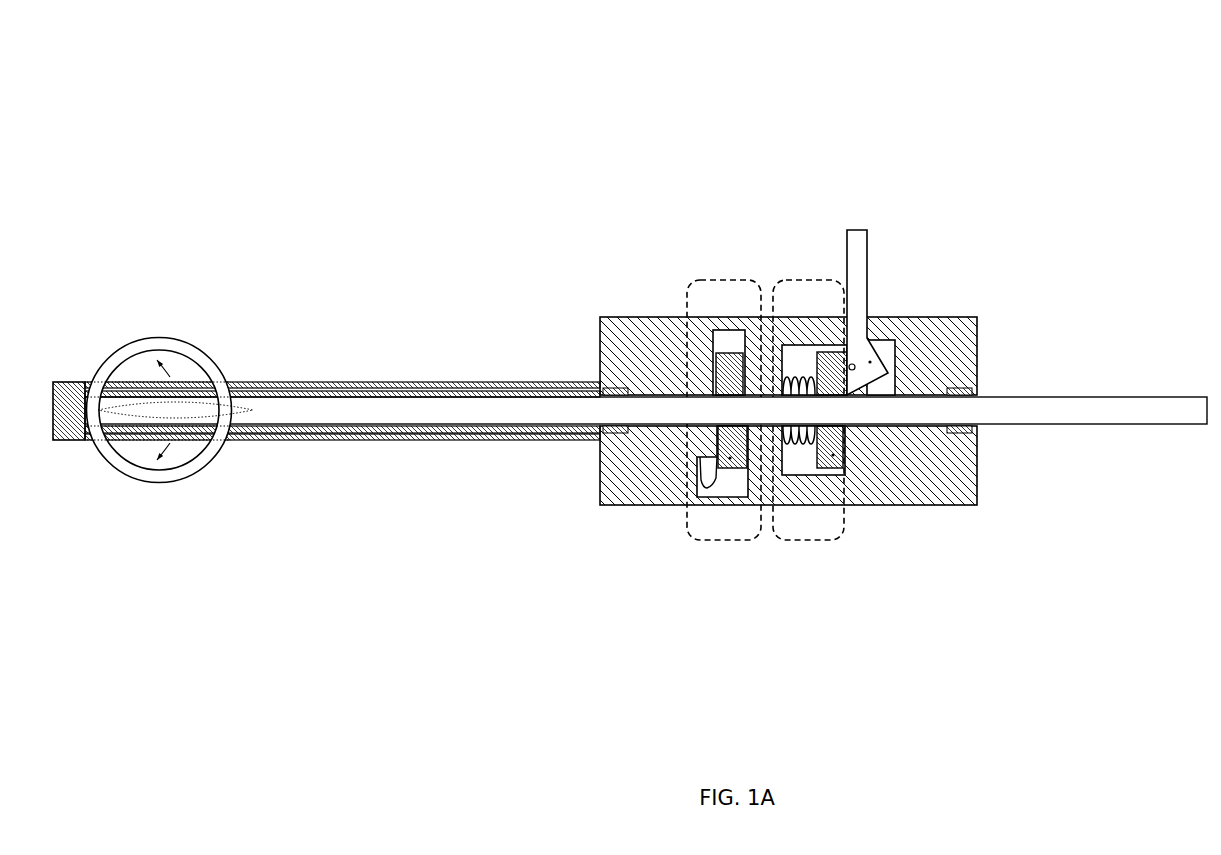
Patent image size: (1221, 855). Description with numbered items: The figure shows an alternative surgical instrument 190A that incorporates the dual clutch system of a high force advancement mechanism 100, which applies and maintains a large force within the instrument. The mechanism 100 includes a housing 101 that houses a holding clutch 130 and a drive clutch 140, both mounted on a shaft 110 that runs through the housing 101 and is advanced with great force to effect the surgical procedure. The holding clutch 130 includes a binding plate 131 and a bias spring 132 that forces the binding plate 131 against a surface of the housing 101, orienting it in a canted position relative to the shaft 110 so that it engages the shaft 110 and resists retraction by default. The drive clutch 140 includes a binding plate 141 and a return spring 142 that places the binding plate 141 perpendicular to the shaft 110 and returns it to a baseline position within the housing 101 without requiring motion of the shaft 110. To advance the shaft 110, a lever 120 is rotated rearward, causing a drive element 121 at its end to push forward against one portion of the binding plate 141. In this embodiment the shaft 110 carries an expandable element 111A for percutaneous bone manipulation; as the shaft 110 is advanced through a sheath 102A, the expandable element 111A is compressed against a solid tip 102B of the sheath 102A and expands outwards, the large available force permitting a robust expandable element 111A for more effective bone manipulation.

The high force advancement mechanism 100 is at (646, 379).
The surgical instrument 190A is at (326, 310).
The housing 101 is at (978, 462).
The sheath 102A is at (375, 438).
The solid tip 102B is at (70, 442).
The shaft 110 is at (342, 394).
The expandable element 111A is at (222, 352).
The lever 120 is at (866, 242).
The drive element 121 is at (868, 338).
The holding clutch 130 is at (696, 425).
The binding plate 131 is at (730, 470).
The bias spring 132 is at (704, 490).
The drive clutch 140 is at (816, 416).
The binding plate 141 is at (835, 470).
The return spring 142 is at (797, 450).